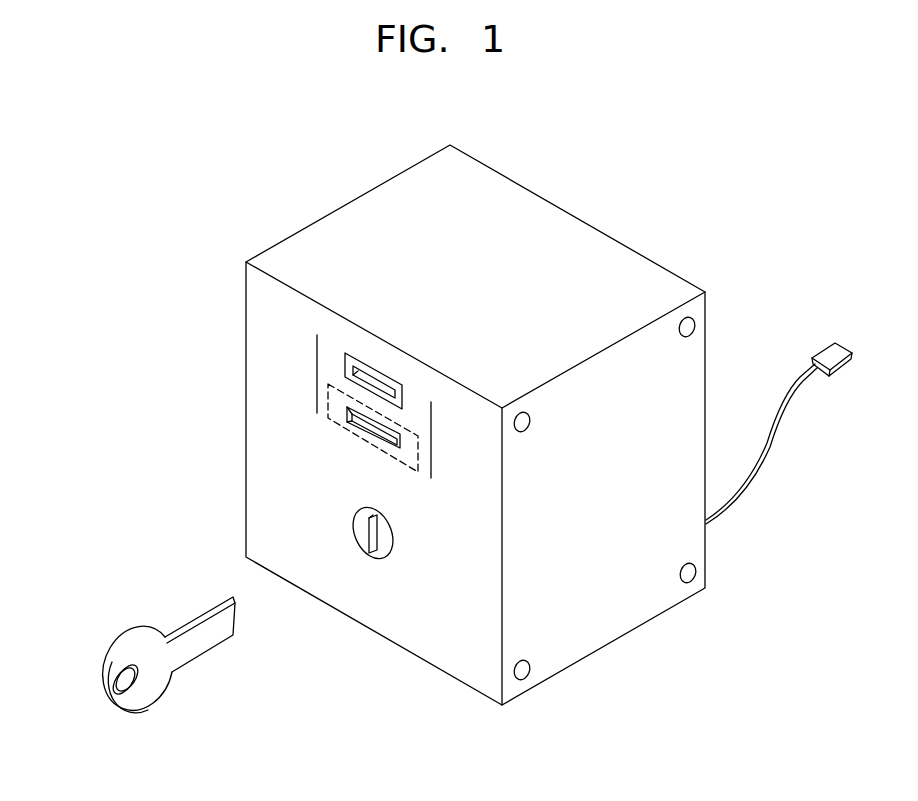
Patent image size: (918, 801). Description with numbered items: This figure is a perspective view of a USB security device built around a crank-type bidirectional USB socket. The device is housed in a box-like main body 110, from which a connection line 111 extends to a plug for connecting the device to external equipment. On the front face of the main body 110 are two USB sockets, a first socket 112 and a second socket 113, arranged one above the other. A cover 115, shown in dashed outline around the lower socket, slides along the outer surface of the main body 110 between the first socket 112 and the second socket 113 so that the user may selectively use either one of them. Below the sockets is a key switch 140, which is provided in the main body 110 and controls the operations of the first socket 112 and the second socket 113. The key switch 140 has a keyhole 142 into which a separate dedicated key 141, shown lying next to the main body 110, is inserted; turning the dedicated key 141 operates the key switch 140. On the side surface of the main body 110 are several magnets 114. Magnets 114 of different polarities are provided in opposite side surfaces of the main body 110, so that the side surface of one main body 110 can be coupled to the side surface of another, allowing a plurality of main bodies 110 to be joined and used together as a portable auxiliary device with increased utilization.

The main body 110 is at (352, 212).
The connection line 111 is at (770, 447).
The first socket 112 is at (347, 418).
The second socket 113 is at (345, 370).
The magnets 114 is at (697, 326).
The cover 115 is at (363, 442).
The key switch 140 is at (369, 563).
The dedicated key 141 is at (190, 617).
The keyhole 142 is at (372, 527).